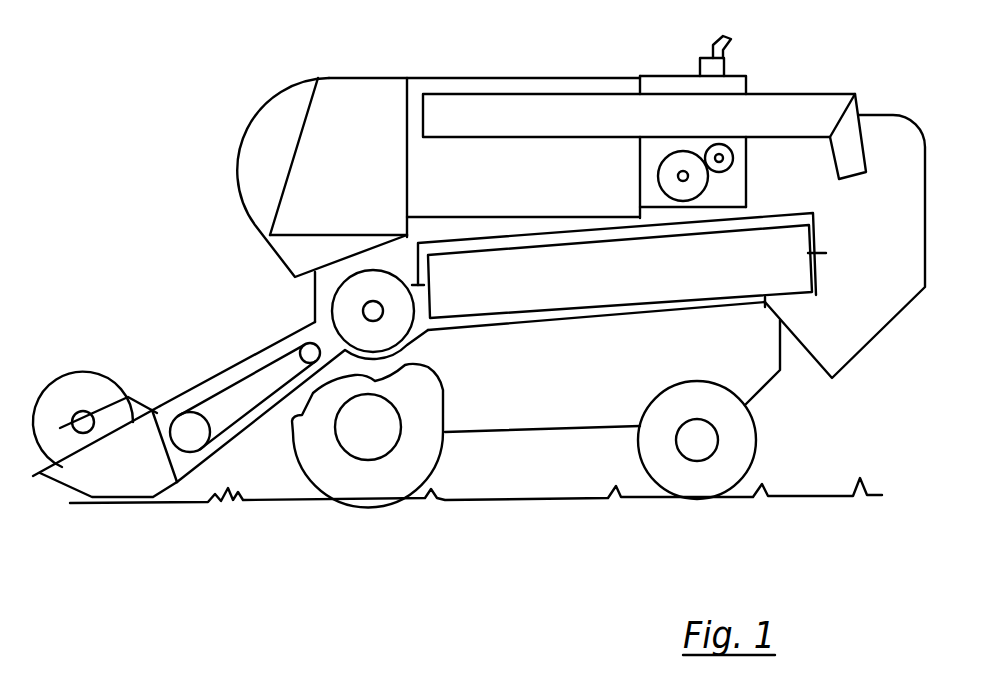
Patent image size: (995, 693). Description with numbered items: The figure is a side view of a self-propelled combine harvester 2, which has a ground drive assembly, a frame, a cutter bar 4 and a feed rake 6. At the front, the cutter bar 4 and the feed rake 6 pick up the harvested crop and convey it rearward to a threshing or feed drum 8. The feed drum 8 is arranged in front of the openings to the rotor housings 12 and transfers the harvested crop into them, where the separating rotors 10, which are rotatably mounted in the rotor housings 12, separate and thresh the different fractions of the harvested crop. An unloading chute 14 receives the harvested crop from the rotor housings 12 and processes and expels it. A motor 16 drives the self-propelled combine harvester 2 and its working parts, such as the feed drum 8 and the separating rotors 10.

The self-propelled combine harvester 2 is at (441, 79).
The cutter bar 4 is at (110, 483).
The feed rake 6 is at (222, 392).
The feed drum 8 is at (345, 317).
The separating rotors 10 is at (632, 286).
The rotor housings 12 is at (499, 238).
The unloading chute 14 is at (807, 360).
The motor 16 is at (694, 157).